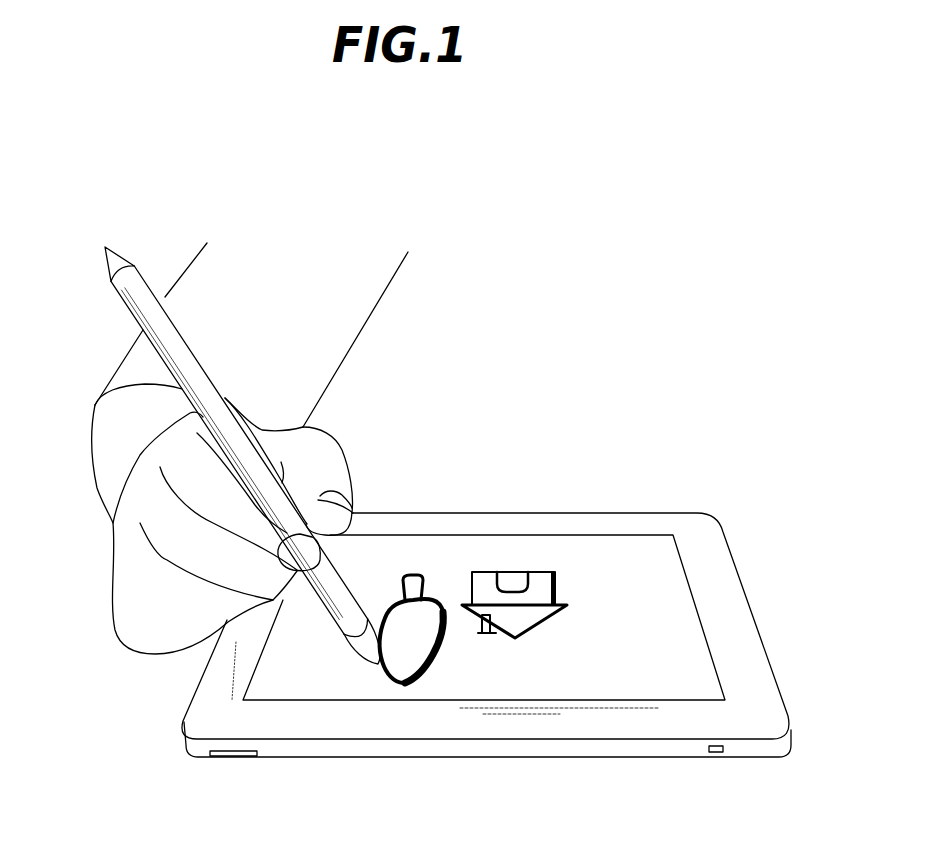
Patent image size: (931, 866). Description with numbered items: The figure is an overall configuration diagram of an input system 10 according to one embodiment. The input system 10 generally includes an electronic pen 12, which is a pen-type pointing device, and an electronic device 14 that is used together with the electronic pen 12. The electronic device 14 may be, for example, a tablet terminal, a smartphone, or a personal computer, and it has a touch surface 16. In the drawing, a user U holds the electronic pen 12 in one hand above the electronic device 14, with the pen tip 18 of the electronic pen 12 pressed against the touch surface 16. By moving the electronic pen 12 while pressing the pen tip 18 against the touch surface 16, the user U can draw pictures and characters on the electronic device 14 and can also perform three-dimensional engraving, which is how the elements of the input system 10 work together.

The input system 10 is at (75, 177).
The electronic pen 12 is at (232, 418).
The electronic device 14 is at (748, 707).
The touch surface 16 is at (678, 607).
The pen tip 18 is at (372, 650).
The user U is at (343, 313).